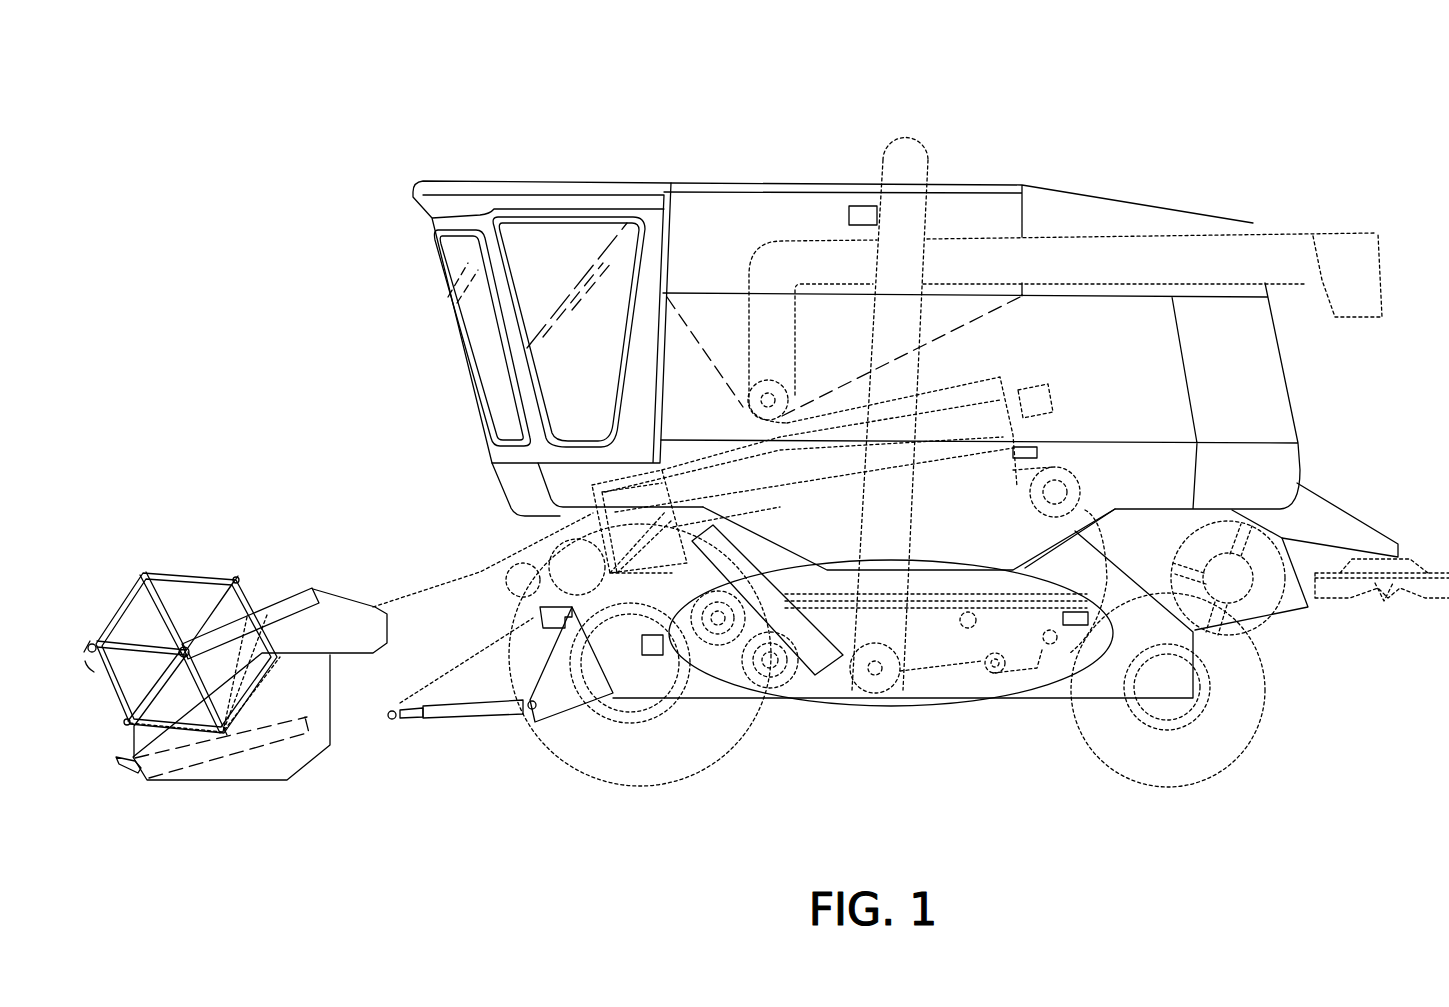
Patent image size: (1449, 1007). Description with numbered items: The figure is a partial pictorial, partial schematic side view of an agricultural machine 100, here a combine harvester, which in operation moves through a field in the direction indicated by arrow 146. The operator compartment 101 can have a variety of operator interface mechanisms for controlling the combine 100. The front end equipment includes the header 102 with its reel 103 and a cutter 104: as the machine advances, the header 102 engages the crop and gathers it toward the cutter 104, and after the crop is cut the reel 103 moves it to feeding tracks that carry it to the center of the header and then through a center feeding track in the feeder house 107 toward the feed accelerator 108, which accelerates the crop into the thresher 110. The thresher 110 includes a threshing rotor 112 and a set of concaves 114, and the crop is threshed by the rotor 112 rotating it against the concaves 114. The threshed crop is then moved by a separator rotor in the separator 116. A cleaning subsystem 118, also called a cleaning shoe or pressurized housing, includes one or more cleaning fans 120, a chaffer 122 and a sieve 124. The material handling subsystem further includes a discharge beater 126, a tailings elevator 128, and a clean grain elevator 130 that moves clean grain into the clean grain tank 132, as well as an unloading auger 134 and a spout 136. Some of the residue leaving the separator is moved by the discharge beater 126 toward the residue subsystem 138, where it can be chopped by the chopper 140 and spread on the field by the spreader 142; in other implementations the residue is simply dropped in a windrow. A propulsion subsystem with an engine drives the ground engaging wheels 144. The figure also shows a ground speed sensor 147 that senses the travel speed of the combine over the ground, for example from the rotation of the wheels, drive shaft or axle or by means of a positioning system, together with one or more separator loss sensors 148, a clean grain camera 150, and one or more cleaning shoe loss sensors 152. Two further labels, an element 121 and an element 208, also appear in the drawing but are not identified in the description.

The agricultural machine 100 is at (1298, 55).
The operator compartment 101 is at (541, 176).
The header 102 is at (192, 563).
The reel 103 is at (227, 577).
The cutter 104 is at (117, 772).
The feeder house 107 is at (420, 584).
The feed accelerator 108 is at (555, 530).
The thresher 110 is at (948, 376).
The threshing rotor 112 is at (1005, 377).
The concaves 114 is at (1037, 450).
The separator 116 is at (937, 513).
The cleaning subsystem 118 is at (1078, 645).
The cleaning fan 120 is at (737, 662).
The cleaning system 121 is at (893, 712).
The chaffer 122 is at (1030, 592).
The sieve 124 is at (993, 607).
The discharge beater 126 is at (1077, 480).
The tailings elevator 128 is at (812, 672).
The clean grain elevator 130 is at (902, 623).
The clean grain tank 132 is at (707, 280).
The unloading auger 134 is at (793, 403).
The spout 136 is at (1347, 233).
The residue subsystem 138 is at (1362, 498).
The chopper 140 is at (1250, 638).
The spreader 142 is at (1342, 602).
The ground engaging wheels 144 is at (545, 747).
The arrow 146 is at (375, 403).
The ground speed sensor 147 is at (651, 655).
The separator loss sensor 148 is at (1060, 443).
The clean grain camera 150 is at (852, 206).
The cleaning shoe loss sensor 152 is at (1088, 616).
The rear wheel 208 is at (1110, 553).